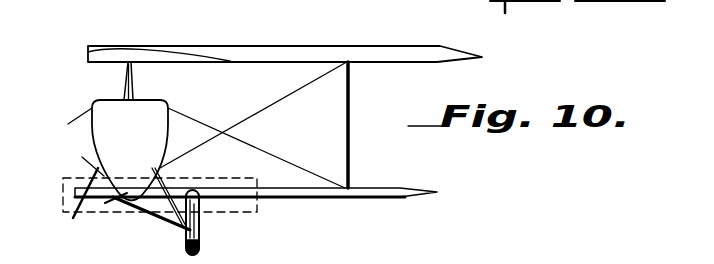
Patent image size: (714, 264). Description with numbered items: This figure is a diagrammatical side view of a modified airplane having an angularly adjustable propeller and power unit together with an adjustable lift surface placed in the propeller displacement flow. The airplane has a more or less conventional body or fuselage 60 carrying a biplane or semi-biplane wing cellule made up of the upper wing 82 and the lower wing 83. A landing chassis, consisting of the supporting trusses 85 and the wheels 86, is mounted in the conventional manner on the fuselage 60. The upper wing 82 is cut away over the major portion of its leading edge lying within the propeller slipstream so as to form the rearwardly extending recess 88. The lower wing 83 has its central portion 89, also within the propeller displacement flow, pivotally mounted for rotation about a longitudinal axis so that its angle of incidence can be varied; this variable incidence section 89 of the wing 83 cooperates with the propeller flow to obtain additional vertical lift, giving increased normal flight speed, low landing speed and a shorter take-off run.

The body or fuselage 60 is at (150, 114).
The upper wing 82 is at (293, 58).
The lower wing 83 is at (358, 198).
The supporting trusses 85 is at (181, 216).
The wheels 86 is at (201, 233).
The rearwardly extending recess 88 is at (147, 55).
The central portion of lower wing 89 is at (242, 192).